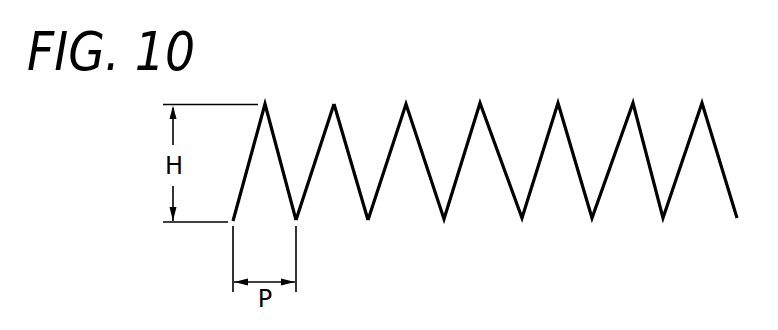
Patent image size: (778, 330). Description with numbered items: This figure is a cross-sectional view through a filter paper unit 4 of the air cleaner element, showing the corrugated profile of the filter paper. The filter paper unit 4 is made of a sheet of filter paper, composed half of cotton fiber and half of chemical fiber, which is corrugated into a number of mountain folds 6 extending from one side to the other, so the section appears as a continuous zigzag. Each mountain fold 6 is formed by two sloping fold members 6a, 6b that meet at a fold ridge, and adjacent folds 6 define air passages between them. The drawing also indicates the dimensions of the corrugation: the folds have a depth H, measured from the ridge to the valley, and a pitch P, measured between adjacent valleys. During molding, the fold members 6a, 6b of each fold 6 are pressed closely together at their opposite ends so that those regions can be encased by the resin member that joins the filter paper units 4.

The filter paper unit 4 is at (485, 114).
The mountain fold 6 is at (356, 125).
The fold member 6a is at (345, 143).
The fold member 6b is at (320, 147).